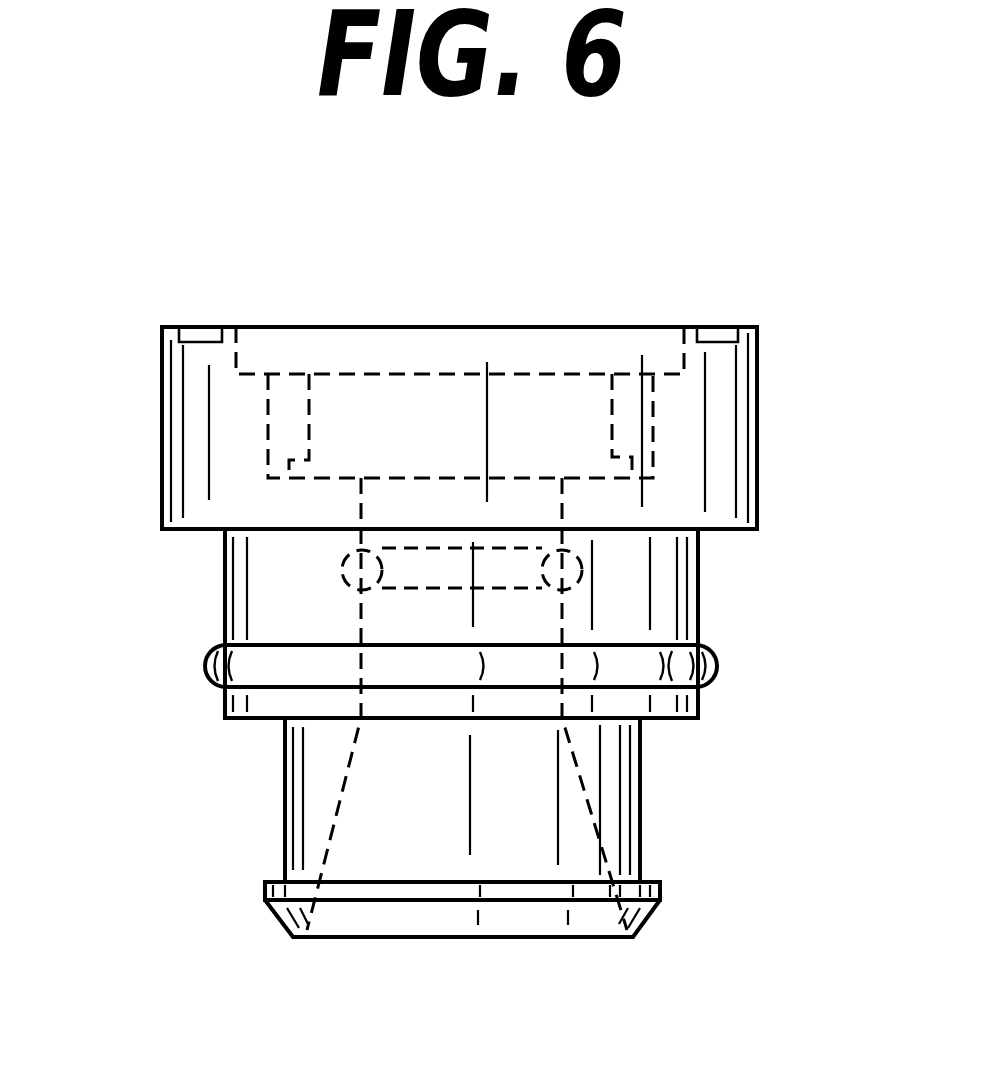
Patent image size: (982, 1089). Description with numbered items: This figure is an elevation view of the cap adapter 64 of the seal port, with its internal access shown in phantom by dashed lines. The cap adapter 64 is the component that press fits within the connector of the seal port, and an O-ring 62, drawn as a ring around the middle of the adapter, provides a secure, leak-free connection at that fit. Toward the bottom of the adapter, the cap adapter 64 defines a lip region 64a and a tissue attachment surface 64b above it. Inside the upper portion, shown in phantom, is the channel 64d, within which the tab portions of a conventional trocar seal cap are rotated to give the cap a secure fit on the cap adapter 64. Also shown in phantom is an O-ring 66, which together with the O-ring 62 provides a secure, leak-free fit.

The cap adapter 64 is at (697, 290).
The channel 64d is at (650, 474).
The O-ring 66 is at (580, 575).
The O-ring 62 is at (717, 672).
The tissue attachment surface 64b is at (283, 818).
The lip region 64a is at (652, 878).